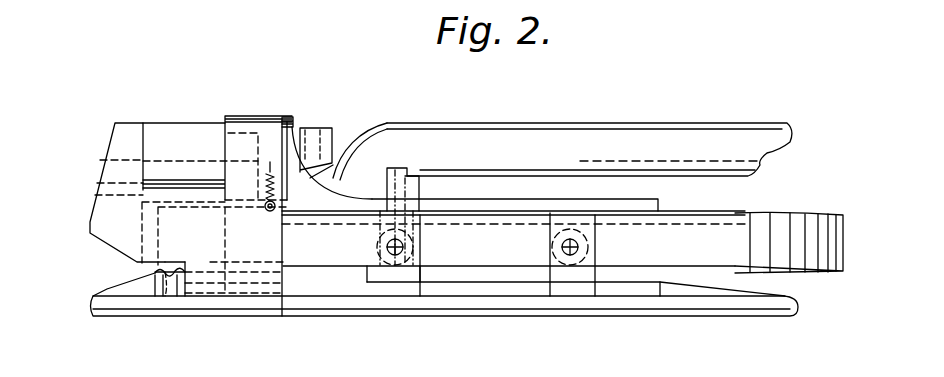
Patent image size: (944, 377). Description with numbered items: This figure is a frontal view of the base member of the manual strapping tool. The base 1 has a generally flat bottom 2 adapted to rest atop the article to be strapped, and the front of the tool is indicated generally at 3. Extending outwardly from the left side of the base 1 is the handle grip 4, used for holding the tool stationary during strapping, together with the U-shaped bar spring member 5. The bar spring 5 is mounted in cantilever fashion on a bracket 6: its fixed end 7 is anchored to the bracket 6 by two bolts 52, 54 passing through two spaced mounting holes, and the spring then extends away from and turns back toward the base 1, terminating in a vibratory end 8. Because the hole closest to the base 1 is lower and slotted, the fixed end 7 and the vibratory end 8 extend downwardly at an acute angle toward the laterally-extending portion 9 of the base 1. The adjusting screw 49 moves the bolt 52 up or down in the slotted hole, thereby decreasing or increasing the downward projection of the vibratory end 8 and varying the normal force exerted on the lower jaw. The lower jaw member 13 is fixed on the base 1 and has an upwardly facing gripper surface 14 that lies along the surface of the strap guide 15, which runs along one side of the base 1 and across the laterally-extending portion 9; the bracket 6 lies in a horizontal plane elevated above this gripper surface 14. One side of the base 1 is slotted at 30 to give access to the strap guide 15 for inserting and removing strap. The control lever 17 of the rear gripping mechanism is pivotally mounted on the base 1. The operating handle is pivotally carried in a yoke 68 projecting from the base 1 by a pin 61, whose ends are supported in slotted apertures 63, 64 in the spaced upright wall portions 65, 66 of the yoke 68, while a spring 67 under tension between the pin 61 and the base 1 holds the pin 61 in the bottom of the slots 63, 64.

The base 1 is at (351, 324).
The flat bottom 2 is at (405, 316).
The front of the tool 3 is at (221, 325).
The handle grip 4 is at (519, 140).
The U-shaped bar spring member 5 is at (836, 243).
The bracket 6 is at (657, 202).
The fixed end 7 is at (450, 268).
The vibratory end 8 is at (332, 254).
The laterally-extending portion 9 is at (105, 289).
The lower jaw member 13 is at (165, 278).
The upwardly facing gripper surface 14 is at (184, 262).
The strap guide 15 is at (170, 262).
The control lever 17 is at (253, 115).
The slot 30 is at (135, 262).
The adjusting screw 49 is at (400, 171).
The bolt 52 is at (412, 248).
The bolt 54 is at (590, 244).
The pin 61 is at (100, 171).
The slotted aperture 63 is at (112, 134).
The slotted aperture 64 is at (212, 134).
The upright wall portion 65 is at (100, 194).
The upright wall portion 66 is at (291, 122).
The spring 67 is at (288, 200).
The yoke 68 is at (158, 128).